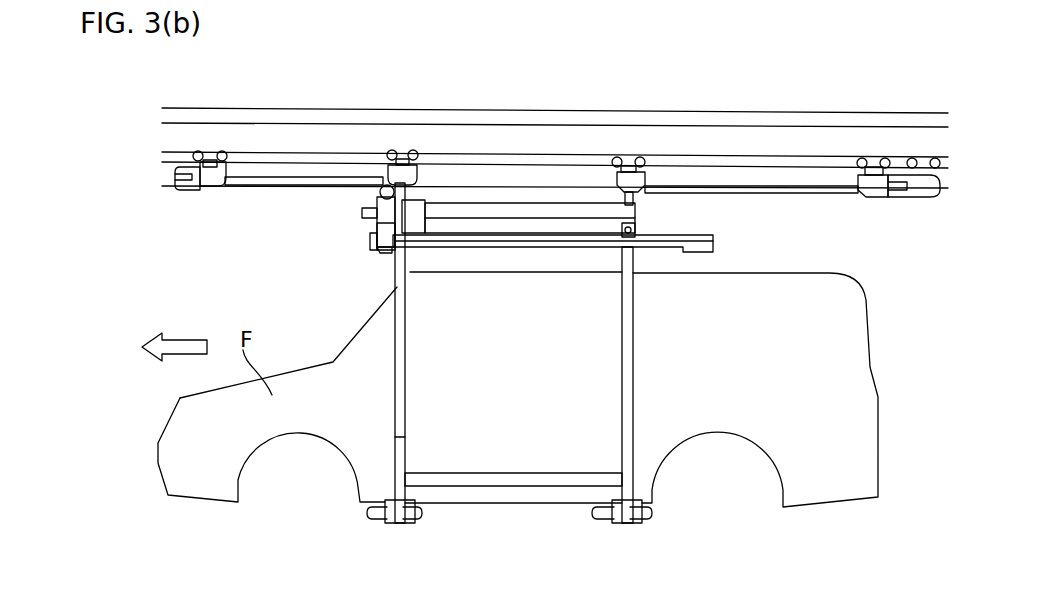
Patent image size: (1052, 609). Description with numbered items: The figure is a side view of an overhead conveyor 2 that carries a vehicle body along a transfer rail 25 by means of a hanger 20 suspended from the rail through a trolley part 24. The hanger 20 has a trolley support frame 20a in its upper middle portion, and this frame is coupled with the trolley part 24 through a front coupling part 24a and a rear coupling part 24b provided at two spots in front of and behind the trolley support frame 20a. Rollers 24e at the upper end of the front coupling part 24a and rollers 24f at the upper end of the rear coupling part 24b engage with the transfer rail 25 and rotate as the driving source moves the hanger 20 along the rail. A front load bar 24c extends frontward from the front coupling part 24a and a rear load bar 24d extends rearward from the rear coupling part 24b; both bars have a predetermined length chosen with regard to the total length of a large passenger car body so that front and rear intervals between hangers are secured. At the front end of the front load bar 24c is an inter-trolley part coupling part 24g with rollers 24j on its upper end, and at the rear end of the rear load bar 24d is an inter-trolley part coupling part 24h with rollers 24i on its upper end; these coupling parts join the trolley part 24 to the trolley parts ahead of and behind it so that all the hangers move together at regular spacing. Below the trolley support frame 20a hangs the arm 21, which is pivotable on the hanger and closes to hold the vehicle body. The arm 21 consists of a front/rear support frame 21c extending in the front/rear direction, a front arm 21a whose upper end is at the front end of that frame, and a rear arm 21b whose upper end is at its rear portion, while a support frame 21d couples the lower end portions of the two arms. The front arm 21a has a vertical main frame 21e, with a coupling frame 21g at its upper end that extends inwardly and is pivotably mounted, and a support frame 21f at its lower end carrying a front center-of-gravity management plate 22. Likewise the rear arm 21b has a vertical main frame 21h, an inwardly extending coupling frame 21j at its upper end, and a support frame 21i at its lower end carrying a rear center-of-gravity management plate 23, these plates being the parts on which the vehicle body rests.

The overhead conveyor 2 is at (555, 119).
The hanger 20 is at (591, 152).
The trolley support frame 20a is at (455, 212).
The arm 21 is at (538, 324).
The front arm 21a is at (400, 307).
The rear arm 21b is at (633, 283).
The front/rear support frame 21c is at (513, 242).
The support frame 21d is at (510, 487).
The main frame 21e is at (397, 436).
The support frame 21f is at (405, 523).
The coupling frame 21g is at (393, 256).
The main frame 21h is at (633, 437).
The support frame 21i is at (632, 523).
The coupling frame 21j is at (620, 233).
The front center-of-gravity management plate 22 is at (375, 516).
The rear center-of-gravity management plate 23 is at (600, 516).
The trolley part 24 is at (557, 162).
The front coupling part 24a is at (380, 177).
The rear coupling part 24b is at (641, 177).
The front load bar 24c is at (273, 186).
The rear load bar 24d is at (813, 194).
The roller 24e is at (413, 151).
The roller 24f is at (640, 159).
The inter-trolley part coupling part 24g is at (210, 178).
The inter-trolley part coupling part 24h is at (873, 198).
The roller 24i is at (223, 152).
The roller 24j is at (885, 160).
The transfer rail 25 is at (808, 112).